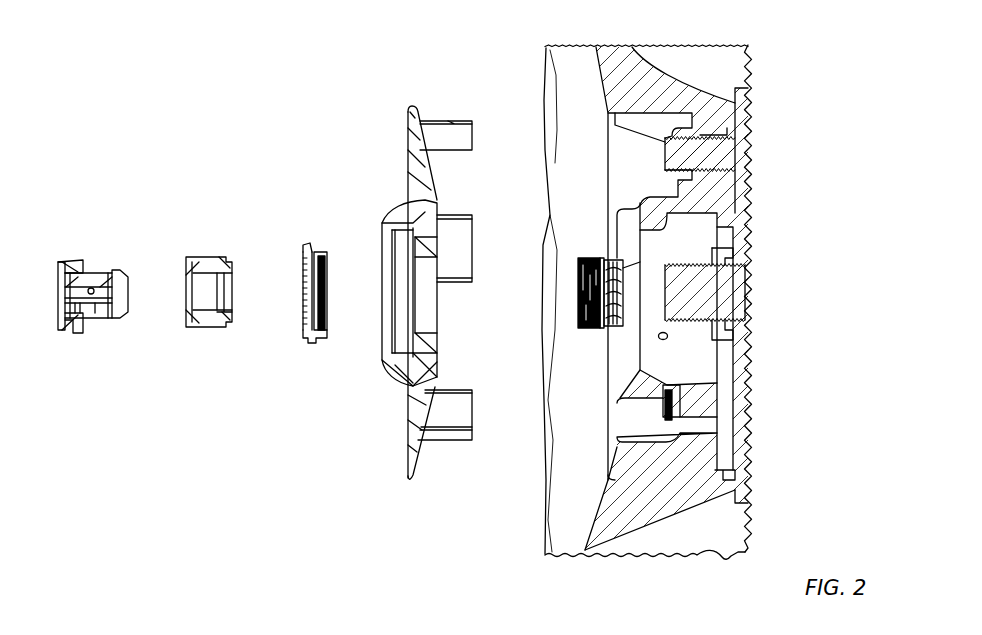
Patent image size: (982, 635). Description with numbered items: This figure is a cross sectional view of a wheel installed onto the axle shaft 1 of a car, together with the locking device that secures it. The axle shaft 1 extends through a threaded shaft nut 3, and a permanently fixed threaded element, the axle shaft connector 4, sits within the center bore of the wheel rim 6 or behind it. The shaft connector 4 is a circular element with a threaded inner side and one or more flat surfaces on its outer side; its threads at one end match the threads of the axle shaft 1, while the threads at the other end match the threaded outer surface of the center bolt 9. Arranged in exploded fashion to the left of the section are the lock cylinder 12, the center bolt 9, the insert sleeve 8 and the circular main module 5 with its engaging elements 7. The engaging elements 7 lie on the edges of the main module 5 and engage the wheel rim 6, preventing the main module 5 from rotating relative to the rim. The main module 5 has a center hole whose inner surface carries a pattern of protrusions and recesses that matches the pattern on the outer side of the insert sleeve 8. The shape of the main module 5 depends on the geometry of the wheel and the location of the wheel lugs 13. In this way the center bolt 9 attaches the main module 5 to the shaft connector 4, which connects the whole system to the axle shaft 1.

The axle shaft 1 is at (710, 295).
The shaft nut 3 is at (723, 260).
The shaft connector 4 is at (617, 325).
The main module 5 is at (407, 218).
The wheel rim 6 is at (623, 520).
The engaging element 7 is at (456, 120).
The insert sleeve 8 is at (322, 255).
The center bolt 9 is at (203, 263).
The lock cylinder 12 is at (79, 266).
The wheel lugs 13 is at (698, 133).